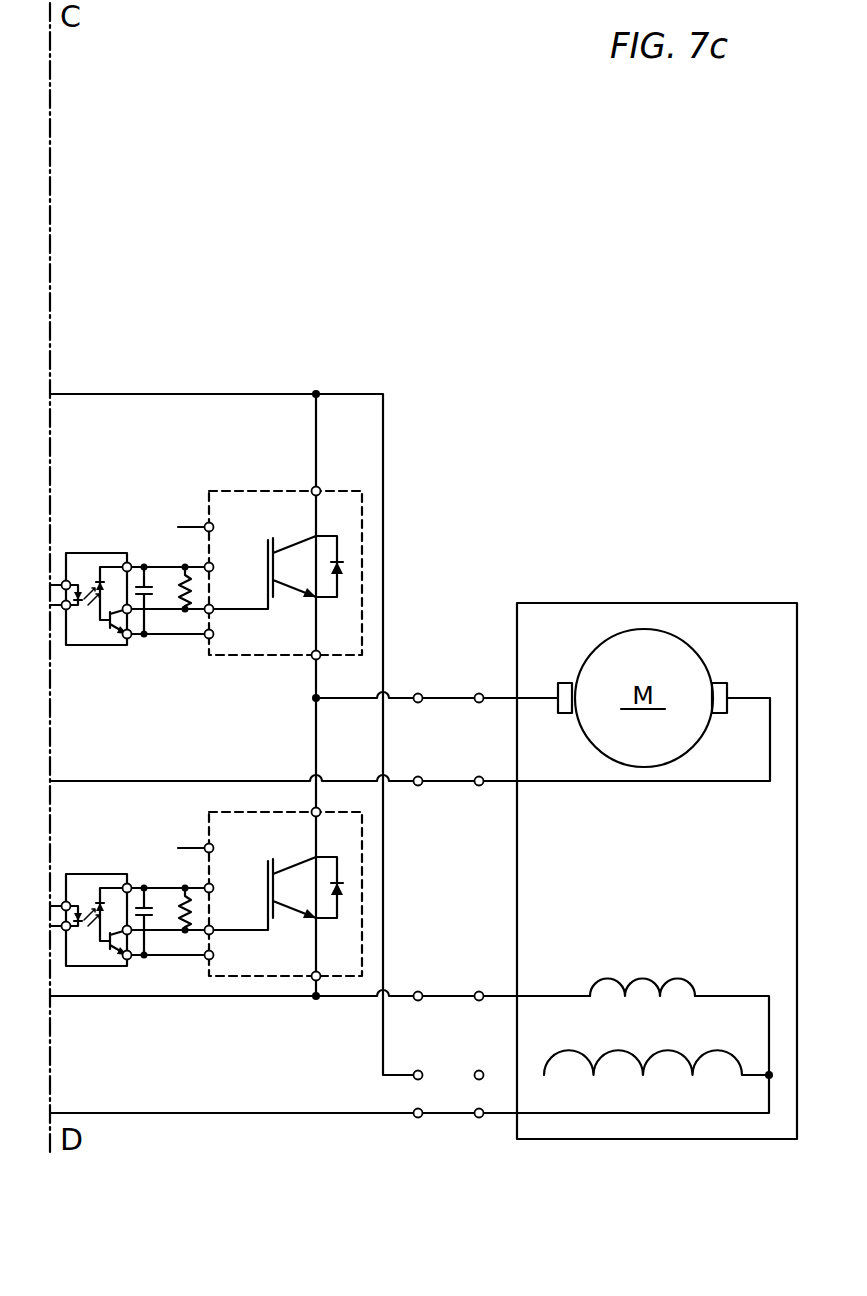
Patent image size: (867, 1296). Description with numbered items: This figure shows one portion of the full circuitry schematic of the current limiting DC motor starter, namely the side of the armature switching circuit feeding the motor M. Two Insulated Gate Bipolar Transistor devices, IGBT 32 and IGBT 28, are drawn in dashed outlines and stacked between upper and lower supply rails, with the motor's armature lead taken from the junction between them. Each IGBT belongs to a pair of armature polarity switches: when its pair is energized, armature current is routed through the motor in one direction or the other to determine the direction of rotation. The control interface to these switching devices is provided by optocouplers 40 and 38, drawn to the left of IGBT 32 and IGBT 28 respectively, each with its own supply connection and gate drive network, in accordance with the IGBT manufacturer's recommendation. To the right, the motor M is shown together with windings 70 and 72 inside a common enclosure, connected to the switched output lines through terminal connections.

The IGBT device 28 is at (262, 893).
The IGBT device 32 is at (338, 510).
The optocoupler 38 is at (129, 898).
The optocoupler 40 is at (90, 563).
The series field winding 70 is at (645, 976).
The field winding 72 is at (622, 1048).